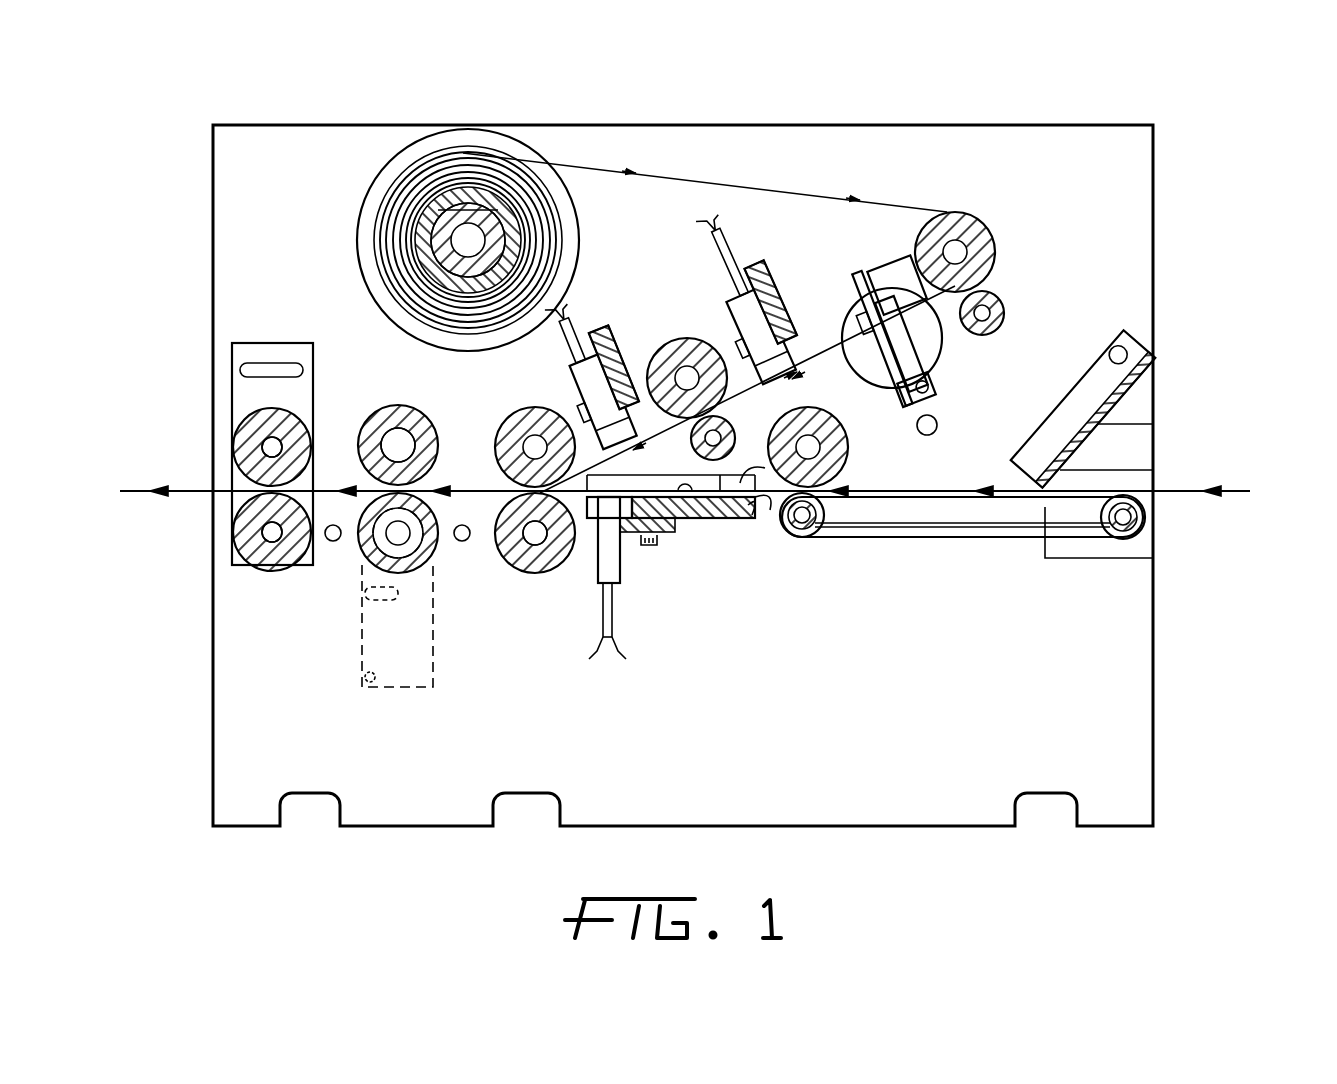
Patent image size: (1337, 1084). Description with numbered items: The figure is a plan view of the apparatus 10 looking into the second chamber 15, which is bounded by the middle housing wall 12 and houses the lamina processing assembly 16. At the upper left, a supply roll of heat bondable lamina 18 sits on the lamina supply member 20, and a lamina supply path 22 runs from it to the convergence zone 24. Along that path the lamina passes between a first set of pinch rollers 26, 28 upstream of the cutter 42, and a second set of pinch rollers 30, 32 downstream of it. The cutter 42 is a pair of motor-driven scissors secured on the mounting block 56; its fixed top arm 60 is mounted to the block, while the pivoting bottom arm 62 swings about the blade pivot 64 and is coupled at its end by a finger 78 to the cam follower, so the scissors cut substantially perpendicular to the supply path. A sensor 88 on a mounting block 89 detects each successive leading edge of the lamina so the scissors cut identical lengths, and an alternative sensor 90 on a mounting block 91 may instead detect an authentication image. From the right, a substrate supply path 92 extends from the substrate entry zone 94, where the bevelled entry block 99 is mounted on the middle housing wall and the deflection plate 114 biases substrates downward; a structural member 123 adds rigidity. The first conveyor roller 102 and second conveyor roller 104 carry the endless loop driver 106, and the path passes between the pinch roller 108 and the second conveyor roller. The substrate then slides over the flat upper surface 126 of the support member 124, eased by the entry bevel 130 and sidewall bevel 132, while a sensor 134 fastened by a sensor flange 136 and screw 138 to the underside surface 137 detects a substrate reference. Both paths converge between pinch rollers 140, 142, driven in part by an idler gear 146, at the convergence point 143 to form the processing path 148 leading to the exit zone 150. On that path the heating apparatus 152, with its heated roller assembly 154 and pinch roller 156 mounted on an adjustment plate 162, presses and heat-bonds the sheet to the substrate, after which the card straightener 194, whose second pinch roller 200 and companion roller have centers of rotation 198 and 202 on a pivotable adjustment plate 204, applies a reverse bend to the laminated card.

The apparatus 10 is at (1252, 201).
The middle housing wall 12 is at (905, 137).
The second chamber 15 is at (1112, 689).
The lamina processing assembly 16 is at (362, 208).
The supply roll of heat bondable lamina 18 is at (463, 152).
The lamina supply member 20 is at (398, 162).
The lamina supply path 22 is at (727, 182).
The convergence zone 24 is at (536, 577).
The pinch roller 26 is at (968, 218).
The pinch roller 28 is at (1003, 310).
The pinch roller 30 is at (688, 337).
The pinch roller 32 is at (735, 408).
The cutter 42 is at (853, 264).
The mounting block 56 is at (896, 284).
The fixed top arm 60 is at (860, 333).
The pivoting bottom arm 62 is at (900, 352).
The blade pivot 64 is at (855, 290).
The finger 78 is at (925, 412).
The sensor 88 is at (580, 322).
The mounting block 89 is at (597, 340).
The sensor 90 is at (735, 252).
The mounting block 91 is at (770, 285).
The substrate supply path 92 is at (1195, 490).
The substrate entry zone 94 is at (1153, 438).
The bevelled entry block 99 is at (1123, 443).
The first conveyor roller 102 is at (1146, 517).
The second conveyor roller 104 is at (860, 525).
The endless loop driver 106 is at (995, 534).
The pinch roller 108 is at (932, 436).
The deflection plate 114 is at (1070, 400).
The structural member 123 is at (633, 487).
The support member 124 is at (753, 528).
The flat upper surface 126 is at (710, 520).
The entry bevel 130 is at (787, 537).
The entry bevel 132 is at (790, 473).
The sensor 134 is at (622, 565).
The sensor flange 136 is at (690, 520).
The underside surface 137 is at (730, 520).
The screw 138 is at (648, 545).
The pinch roller 140 is at (515, 562).
The pinch roller 142 is at (540, 402).
The convergence point 143 is at (543, 490).
The idler gear 146 is at (265, 447).
The processing path 148 is at (455, 490).
The exit zone 150 is at (225, 472).
The heating apparatus 152 is at (398, 402).
The heated roller assembly 154 is at (372, 418).
The pinch roller 156 is at (440, 522).
The adjustment plate 162 is at (430, 683).
The card straightener 194 is at (286, 338).
The center of rotation 198 is at (232, 430).
The second pinch roller 200 is at (233, 526).
The center of rotation 202 is at (237, 568).
The adjustment plate 204 is at (237, 345).